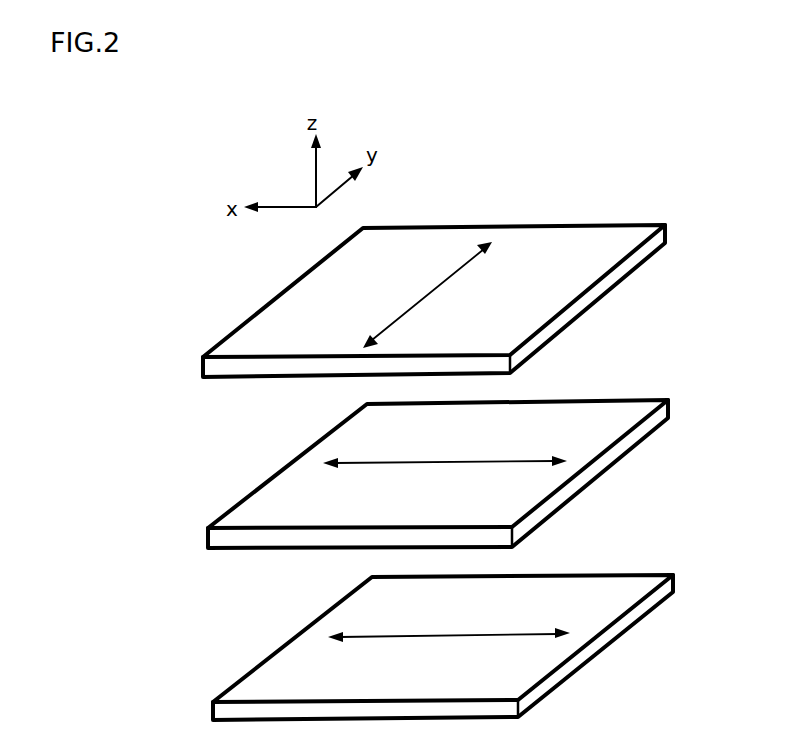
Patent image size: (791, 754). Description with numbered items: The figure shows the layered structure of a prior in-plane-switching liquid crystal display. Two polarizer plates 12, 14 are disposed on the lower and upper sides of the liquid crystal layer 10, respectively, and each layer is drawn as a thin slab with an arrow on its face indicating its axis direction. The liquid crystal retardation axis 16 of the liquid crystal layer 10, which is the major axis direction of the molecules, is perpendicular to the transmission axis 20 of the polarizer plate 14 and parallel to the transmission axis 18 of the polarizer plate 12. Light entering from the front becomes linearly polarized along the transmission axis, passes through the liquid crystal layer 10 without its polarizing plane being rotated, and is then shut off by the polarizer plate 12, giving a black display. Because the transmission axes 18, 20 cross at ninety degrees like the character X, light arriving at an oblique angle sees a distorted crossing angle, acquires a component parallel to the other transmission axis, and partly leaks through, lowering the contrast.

The liquid crystal layer 10 is at (271, 479).
The polarizer plate 12 is at (278, 653).
The polarizer plate 14 is at (268, 303).
The liquid crystal retardation axis 16 is at (440, 461).
The transmission axis 18 is at (443, 633).
The transmission axis 20 is at (440, 287).